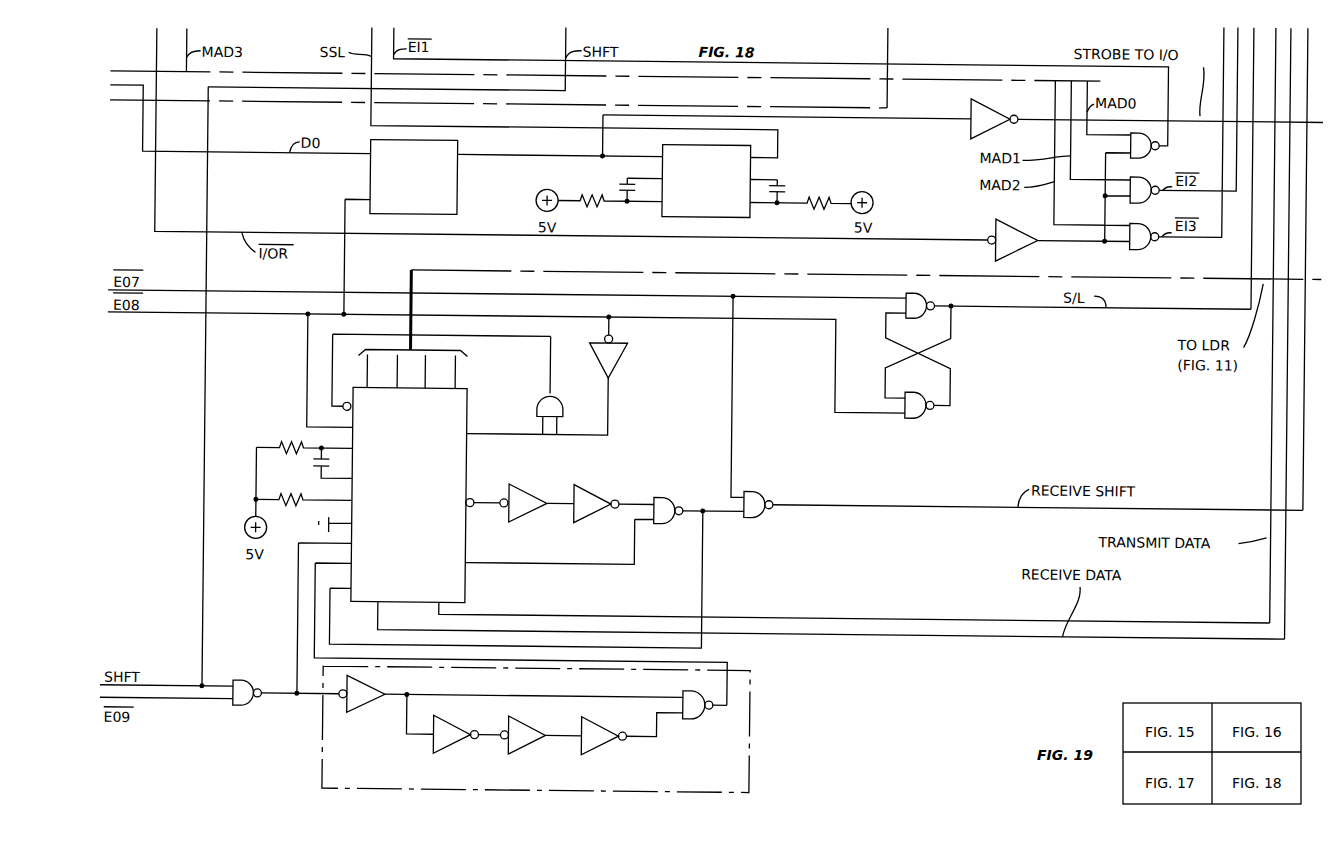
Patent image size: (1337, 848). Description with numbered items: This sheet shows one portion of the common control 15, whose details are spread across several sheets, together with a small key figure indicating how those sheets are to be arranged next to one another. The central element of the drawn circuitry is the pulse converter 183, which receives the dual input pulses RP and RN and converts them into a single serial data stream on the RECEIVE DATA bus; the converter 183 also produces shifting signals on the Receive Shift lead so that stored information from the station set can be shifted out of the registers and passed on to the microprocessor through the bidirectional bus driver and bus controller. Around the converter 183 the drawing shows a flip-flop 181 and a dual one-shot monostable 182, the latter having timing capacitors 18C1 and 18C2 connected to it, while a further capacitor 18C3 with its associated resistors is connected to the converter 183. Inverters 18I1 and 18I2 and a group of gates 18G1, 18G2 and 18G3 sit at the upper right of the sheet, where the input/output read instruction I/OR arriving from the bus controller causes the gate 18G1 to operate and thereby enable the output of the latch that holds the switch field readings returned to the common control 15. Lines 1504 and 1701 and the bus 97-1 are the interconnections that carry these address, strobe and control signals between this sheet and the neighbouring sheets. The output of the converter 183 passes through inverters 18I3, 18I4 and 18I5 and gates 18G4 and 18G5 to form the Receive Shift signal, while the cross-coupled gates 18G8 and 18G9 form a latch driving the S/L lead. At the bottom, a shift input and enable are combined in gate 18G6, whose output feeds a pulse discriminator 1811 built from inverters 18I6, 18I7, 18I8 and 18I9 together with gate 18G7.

The flip-flop 181 is at (456, 147).
The dual one shot monostable 182 is at (744, 218).
The pulse converter 183 is at (472, 400).
The bus line 1504 is at (838, 78).
The line 1701 is at (884, 100).
The line 97-1 is at (1173, 273).
The pulse discriminator 1811 is at (753, 782).
The inverter 18I1 is at (968, 128).
The inverter 18I2 is at (1003, 255).
The inverter 18I3 is at (620, 360).
The inverter 18I4 is at (550, 481).
The inverter 18I5 is at (616, 481).
The inverter 18I6 is at (364, 709).
The inverter 18I7 is at (470, 720).
The inverter 18I8 is at (545, 720).
The inverter 18I9 is at (620, 720).
The gate 18G1 is at (1149, 151).
The NAND gate 18G2 is at (1150, 196).
The NAND gate 18G3 is at (1136, 247).
The NAND gate 18G4 is at (664, 500).
The NAND gate 18G5 is at (753, 494).
The NAND gate 18G6 is at (254, 672).
The NAND gate 18G7 is at (690, 719).
The NAND gate 18G8 is at (913, 292).
The NAND gate 18G9 is at (912, 417).
The capacitor 18C1 is at (618, 182).
The capacitor 18C2 is at (782, 185).
The capacitor 18C3 is at (314, 470).
The common control 15 is at (872, 714).